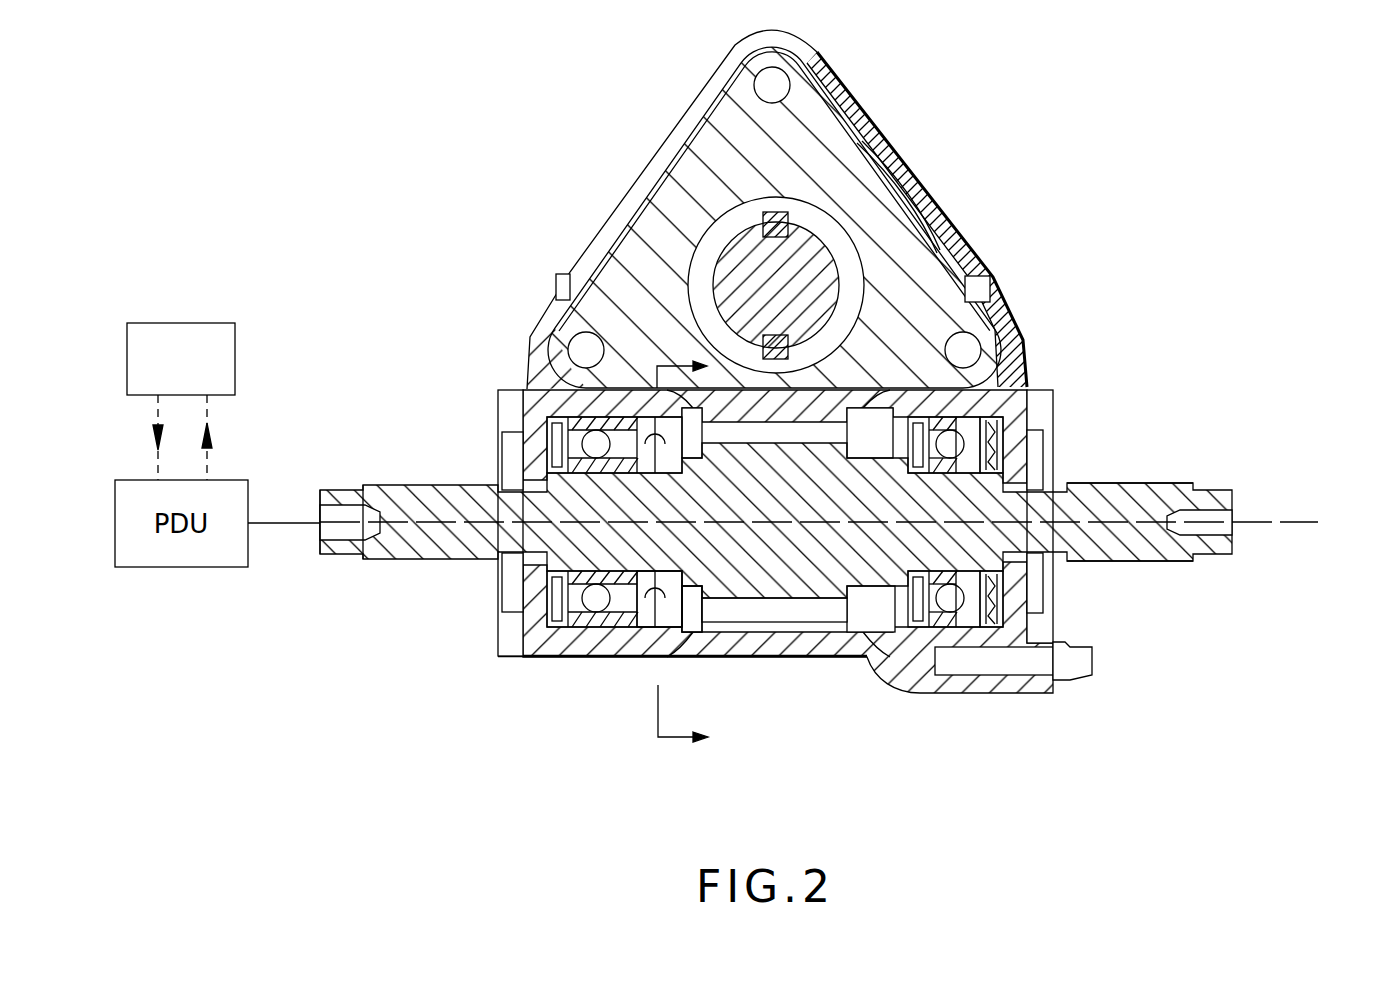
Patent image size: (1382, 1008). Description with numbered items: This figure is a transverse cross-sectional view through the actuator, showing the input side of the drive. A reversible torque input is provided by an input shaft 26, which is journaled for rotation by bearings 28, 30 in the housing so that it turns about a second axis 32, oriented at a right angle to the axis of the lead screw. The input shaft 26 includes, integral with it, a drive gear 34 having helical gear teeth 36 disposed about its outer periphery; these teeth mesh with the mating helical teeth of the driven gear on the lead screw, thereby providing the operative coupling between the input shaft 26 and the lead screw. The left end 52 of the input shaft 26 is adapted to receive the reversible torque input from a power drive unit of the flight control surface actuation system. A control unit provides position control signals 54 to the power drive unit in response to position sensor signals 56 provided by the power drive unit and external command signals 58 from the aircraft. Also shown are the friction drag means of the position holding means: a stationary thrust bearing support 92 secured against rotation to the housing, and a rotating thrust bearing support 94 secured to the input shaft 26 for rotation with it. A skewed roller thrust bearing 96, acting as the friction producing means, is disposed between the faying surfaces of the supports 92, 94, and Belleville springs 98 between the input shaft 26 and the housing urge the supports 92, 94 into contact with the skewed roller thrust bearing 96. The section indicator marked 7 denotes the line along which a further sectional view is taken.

The input shaft 26 is at (1173, 562).
The bearing 28 is at (985, 408).
The bearing 30 is at (572, 413).
The second axis 32 is at (1300, 523).
The drive gear 34 is at (863, 572).
The helical gear teeth 36 is at (828, 618).
The left end of the input shaft 52 is at (377, 563).
The position control signals 54 is at (160, 413).
The position sensor signals 56 is at (205, 410).
The external command signals 58 is at (200, 323).
The stationary thrust bearing support 92 is at (625, 612).
The rotating thrust bearing support 94 is at (690, 610).
The skewed roller thrust bearing 96 is at (635, 600).
The Belleville springs 98 is at (1003, 420).
The section line 7- 7 is at (670, 552).